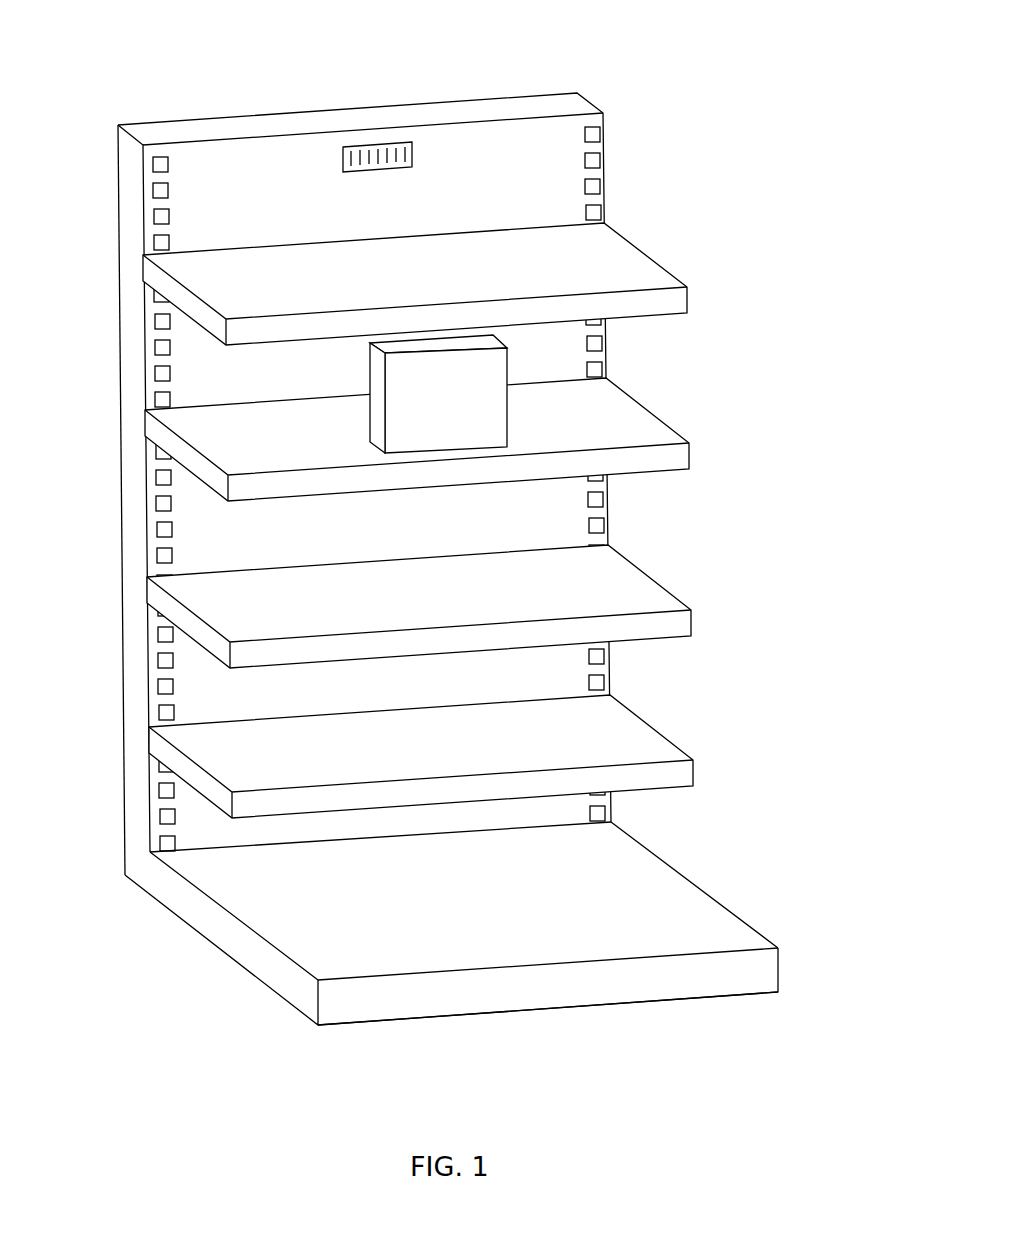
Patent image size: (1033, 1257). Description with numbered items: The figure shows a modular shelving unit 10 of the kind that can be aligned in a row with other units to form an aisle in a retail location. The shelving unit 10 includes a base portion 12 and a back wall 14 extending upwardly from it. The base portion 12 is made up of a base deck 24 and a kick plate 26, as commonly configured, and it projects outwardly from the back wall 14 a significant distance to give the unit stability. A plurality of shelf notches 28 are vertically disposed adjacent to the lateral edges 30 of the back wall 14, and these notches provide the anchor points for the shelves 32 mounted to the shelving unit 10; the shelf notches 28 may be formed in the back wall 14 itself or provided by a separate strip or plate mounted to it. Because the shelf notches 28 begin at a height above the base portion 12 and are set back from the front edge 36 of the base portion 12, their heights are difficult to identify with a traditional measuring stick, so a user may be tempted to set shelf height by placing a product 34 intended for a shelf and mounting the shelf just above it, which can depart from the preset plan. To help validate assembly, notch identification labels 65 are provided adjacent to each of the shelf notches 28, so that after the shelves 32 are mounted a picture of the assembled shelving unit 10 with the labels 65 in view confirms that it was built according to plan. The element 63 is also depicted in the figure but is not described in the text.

The modular shelving unit 10 is at (690, 115).
The base portion 12 is at (451, 952).
The back wall 14 is at (277, 177).
The base deck 24 is at (387, 937).
The kick plate 26 is at (552, 977).
The shelf notches 28 is at (153, 216).
The lateral edges 30 is at (153, 635).
The shelves 32 is at (678, 298).
The product 34 is at (440, 372).
The front edge 36 is at (698, 952).
The barcode label 63 is at (383, 143).
The notch identification labels 65 is at (176, 168).